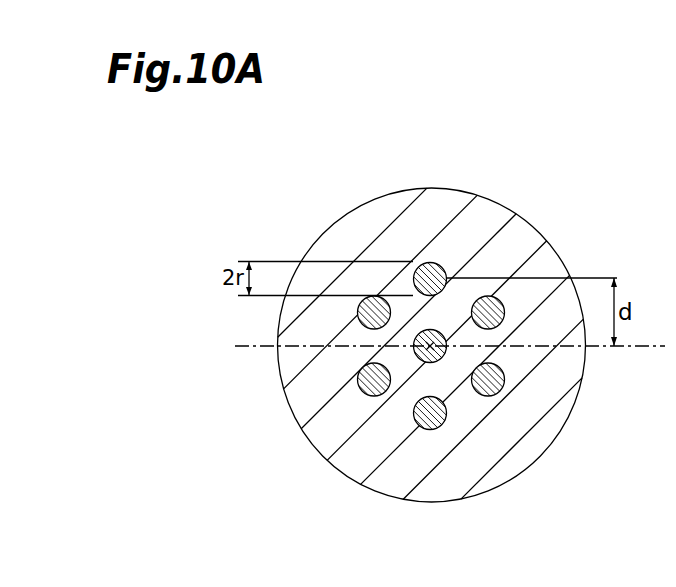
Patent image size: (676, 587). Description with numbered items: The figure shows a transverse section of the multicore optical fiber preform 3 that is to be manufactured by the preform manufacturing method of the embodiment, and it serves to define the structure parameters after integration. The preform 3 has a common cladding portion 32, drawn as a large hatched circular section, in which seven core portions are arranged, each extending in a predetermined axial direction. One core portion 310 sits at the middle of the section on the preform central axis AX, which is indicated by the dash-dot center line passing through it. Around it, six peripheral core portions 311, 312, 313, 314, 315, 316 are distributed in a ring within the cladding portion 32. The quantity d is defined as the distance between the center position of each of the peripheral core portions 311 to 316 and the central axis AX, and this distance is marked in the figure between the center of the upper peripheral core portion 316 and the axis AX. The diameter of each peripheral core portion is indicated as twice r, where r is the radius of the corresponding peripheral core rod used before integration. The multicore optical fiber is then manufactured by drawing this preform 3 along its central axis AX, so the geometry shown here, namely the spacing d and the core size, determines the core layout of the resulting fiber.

The multicore optical fiber preform 3 is at (488, 155).
The common cladding portion 32 is at (485, 207).
The core portion 310 is at (436, 338).
The peripheral core portion 311 is at (503, 314).
The peripheral core portion 312 is at (500, 387).
The peripheral core portion 313 is at (430, 430).
The peripheral core portion 314 is at (358, 383).
The peripheral core portion 315 is at (357, 315).
The peripheral core portion 316 is at (429, 263).
The preform central axis AX is at (441, 360).